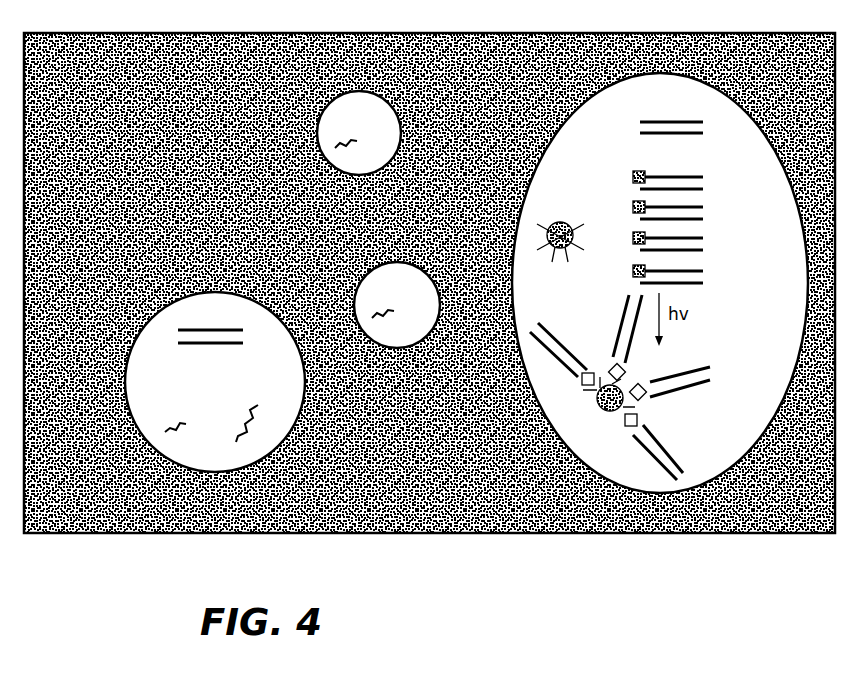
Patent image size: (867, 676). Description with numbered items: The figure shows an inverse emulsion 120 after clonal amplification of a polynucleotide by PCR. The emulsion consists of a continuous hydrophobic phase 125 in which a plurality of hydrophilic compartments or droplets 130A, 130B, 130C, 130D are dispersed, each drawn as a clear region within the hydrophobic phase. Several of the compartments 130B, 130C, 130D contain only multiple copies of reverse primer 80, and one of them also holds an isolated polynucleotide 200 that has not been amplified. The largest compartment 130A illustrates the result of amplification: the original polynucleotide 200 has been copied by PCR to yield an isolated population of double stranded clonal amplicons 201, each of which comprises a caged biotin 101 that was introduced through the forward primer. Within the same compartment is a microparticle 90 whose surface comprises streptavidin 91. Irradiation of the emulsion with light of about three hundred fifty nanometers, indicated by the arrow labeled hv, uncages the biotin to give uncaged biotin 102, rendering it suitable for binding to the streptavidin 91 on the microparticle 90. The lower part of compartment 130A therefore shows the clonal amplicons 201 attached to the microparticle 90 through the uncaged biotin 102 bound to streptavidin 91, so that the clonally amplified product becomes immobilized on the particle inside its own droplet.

The inverse emulsion 120 is at (26, 560).
The hydrophobic phase 125 is at (742, 515).
The hydrophilic compartment 130A is at (718, 89).
The hydrophilic compartment 130B is at (316, 133).
The hydrophilic compartment 130C is at (215, 292).
The hydrophilic compartment 130D is at (393, 262).
The reverse primer 80 is at (341, 140).
The polynucleotide 200 is at (706, 119).
The clonal amplicons 201 is at (708, 177).
The caged biotin 101 is at (633, 270).
The uncaged biotin 102 is at (648, 377).
The microparticle 90 is at (565, 222).
The streptavidin 91 is at (580, 222).